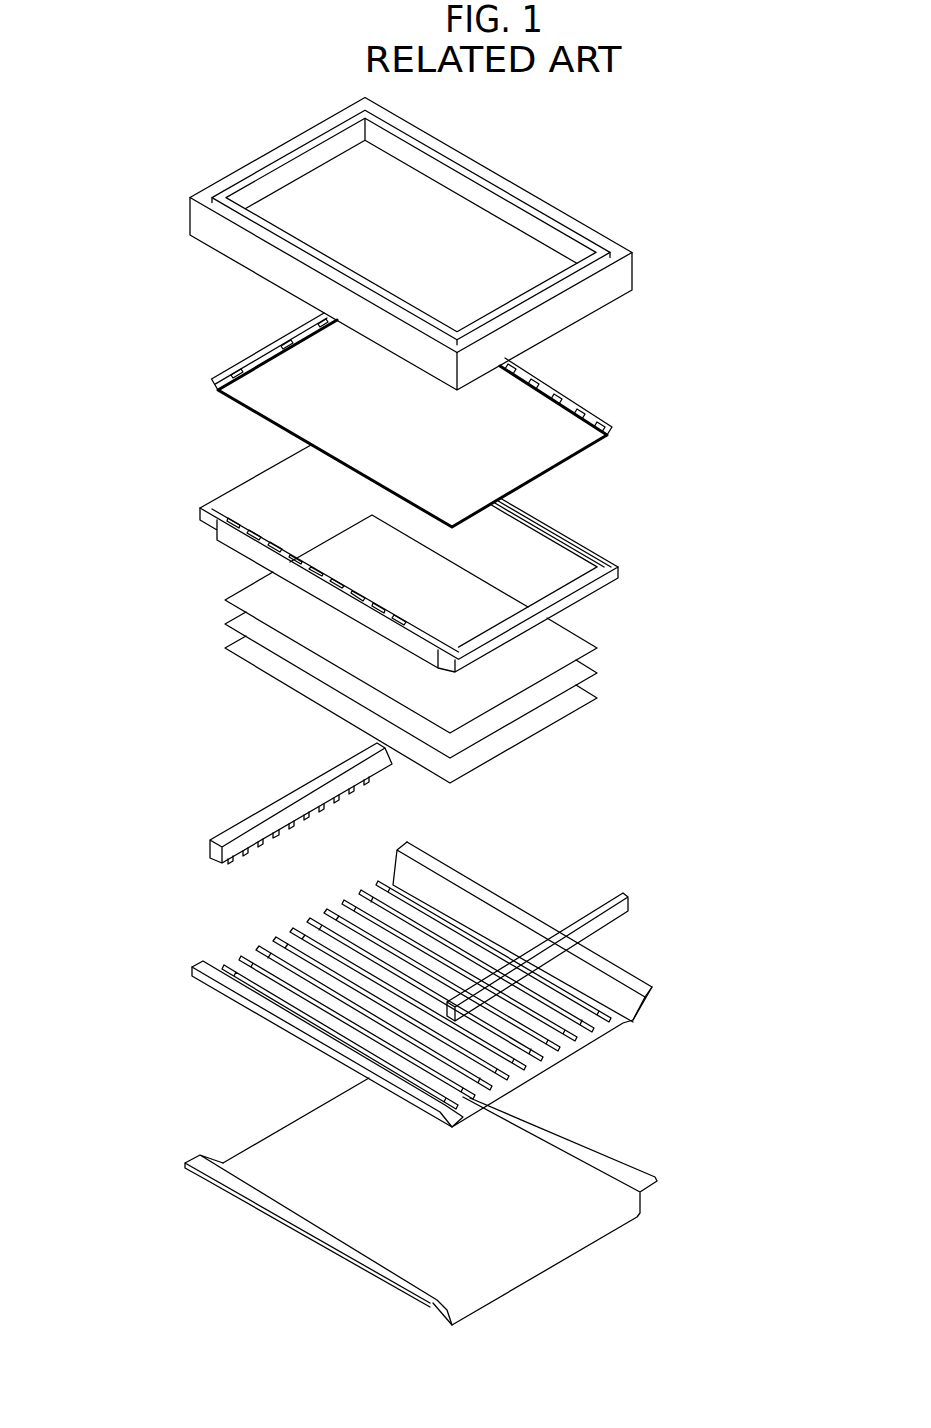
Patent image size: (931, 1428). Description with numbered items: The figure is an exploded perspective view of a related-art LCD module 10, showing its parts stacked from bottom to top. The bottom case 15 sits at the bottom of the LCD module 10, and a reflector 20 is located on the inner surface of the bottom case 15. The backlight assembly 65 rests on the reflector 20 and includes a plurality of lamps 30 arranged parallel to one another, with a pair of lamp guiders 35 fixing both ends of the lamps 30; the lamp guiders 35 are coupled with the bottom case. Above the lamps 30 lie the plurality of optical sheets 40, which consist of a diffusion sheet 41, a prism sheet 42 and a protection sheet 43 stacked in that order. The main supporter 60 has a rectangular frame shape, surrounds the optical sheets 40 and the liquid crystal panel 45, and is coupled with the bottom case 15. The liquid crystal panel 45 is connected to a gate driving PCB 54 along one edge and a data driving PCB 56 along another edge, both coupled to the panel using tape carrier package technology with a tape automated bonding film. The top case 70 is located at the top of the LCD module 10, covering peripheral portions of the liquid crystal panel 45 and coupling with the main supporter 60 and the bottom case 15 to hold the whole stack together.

The LCD module 10 is at (775, 184).
The top case 70 is at (627, 273).
The liquid crystal panel 45 is at (548, 422).
The gate driving PCB 54 is at (226, 372).
The data driving PCB 56 is at (615, 421).
The main supporter 60 is at (608, 564).
The optical sheets 40 is at (461, 649).
The protection sheet 43 is at (583, 649).
The prism sheet 42 is at (583, 673).
The diffusion sheet 41 is at (583, 698).
The backlight assembly 65 is at (712, 940).
The lamp guiders 35 is at (337, 790).
The lamps 30 is at (477, 940).
The reflector 20 is at (620, 973).
The bottom case 15 is at (607, 1155).